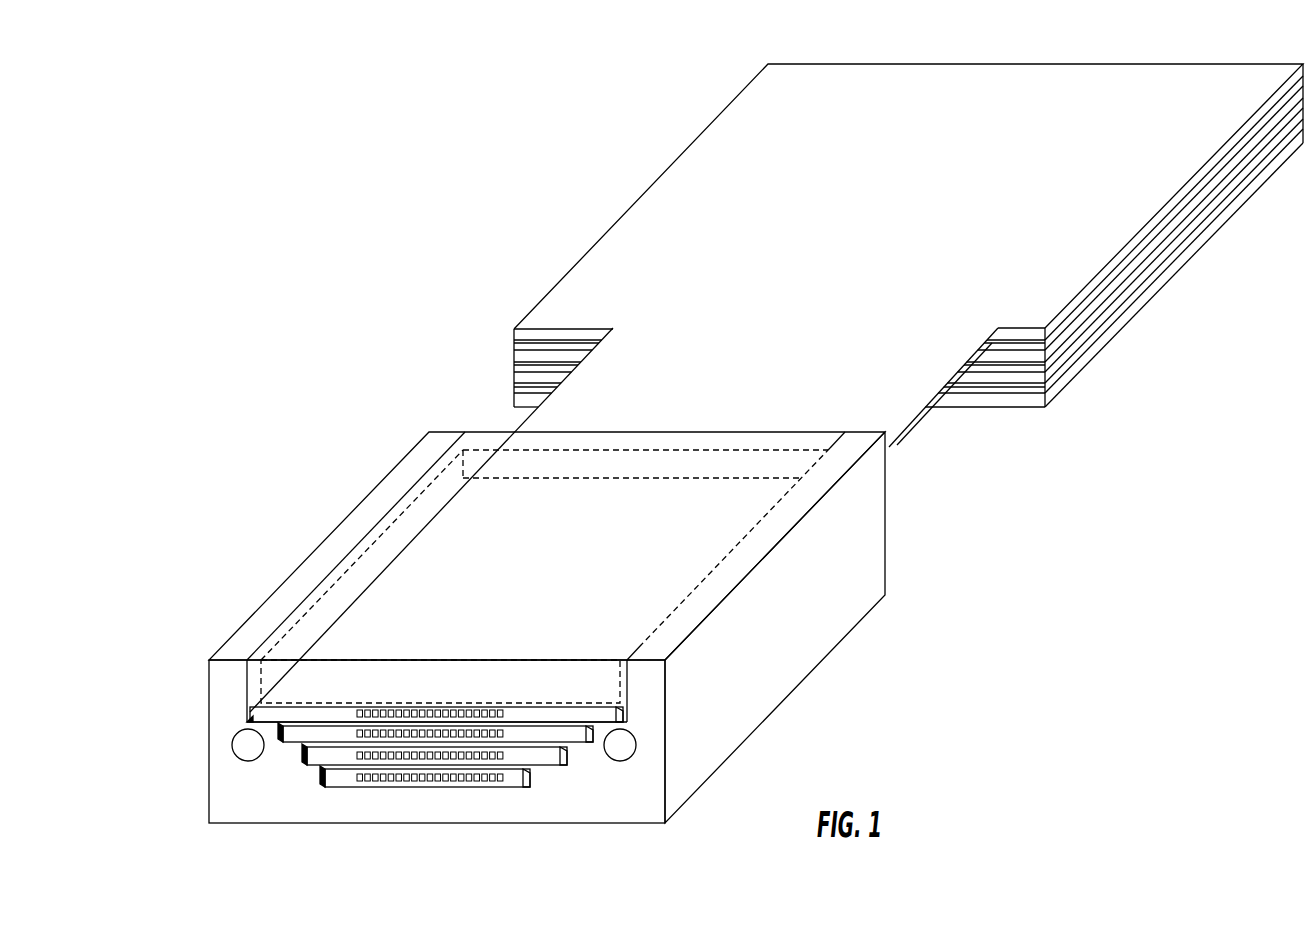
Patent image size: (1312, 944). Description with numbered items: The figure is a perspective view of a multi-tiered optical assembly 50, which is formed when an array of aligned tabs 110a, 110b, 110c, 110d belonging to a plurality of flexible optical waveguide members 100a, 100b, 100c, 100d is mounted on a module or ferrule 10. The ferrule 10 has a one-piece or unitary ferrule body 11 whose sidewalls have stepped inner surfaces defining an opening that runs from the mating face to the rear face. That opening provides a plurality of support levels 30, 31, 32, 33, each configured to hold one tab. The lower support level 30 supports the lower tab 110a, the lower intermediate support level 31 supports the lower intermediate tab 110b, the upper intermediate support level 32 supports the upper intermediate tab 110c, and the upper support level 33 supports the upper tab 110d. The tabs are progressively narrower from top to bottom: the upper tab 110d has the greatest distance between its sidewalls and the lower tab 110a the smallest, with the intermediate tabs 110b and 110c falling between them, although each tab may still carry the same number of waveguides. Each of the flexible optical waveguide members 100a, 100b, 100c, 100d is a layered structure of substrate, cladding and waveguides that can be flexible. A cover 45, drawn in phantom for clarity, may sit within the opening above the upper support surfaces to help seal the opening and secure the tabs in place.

The ferrule 10 is at (873, 640).
The ferrule body 11 is at (782, 705).
The lower support level 30 is at (335, 792).
The lower intermediate support level 31 is at (315, 770).
The upper intermediate support level 32 is at (277, 748).
The upper support level 33 is at (220, 690).
The cover 45 is at (733, 552).
The multi-tiered optical assembly 50 is at (485, 118).
The flexible optical waveguide member 100a is at (1085, 358).
The flexible optical waveguide member 100b is at (1113, 308).
The flexible optical waveguide member 100c is at (1138, 260).
The flexible optical waveguide member 100d is at (1165, 212).
The lower tab 110a is at (530, 777).
The lower intermediate tab 110b is at (565, 750).
The upper intermediate tab 110c is at (587, 742).
The upper tab 110d is at (905, 410).